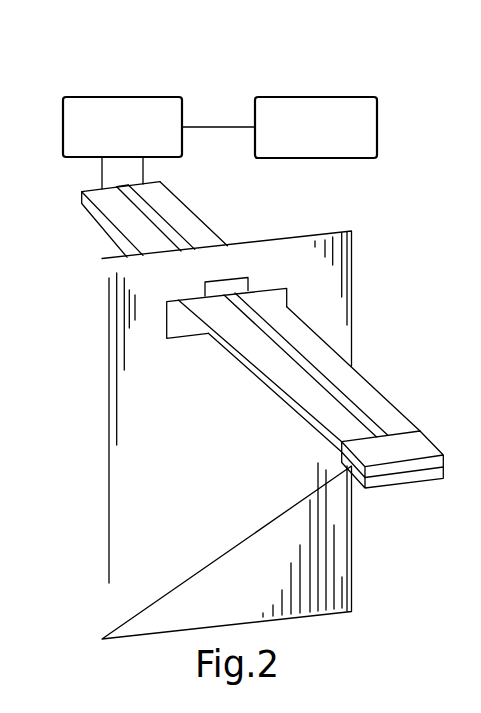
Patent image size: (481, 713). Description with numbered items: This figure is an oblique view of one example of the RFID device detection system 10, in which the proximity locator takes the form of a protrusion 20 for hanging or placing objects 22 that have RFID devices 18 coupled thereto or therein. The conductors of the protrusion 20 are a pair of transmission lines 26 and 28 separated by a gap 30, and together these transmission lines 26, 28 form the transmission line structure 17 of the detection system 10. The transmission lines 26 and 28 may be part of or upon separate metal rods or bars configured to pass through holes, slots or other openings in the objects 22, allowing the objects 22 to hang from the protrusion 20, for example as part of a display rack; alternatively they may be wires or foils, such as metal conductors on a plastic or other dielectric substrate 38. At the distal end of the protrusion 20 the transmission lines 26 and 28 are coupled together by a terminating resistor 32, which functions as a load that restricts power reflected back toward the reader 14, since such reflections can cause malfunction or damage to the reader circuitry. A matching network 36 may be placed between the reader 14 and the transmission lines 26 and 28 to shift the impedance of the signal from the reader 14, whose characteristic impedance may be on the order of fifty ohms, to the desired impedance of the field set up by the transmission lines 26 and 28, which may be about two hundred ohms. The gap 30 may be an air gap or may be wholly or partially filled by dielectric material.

The RFID device detection system 10 is at (72, 55).
The reader 14 is at (325, 96).
The transmission line structure 17 is at (131, 209).
The RFID device 18 is at (232, 288).
The protrusion 20 is at (397, 370).
The object 22 is at (345, 232).
The transmission line 26 is at (118, 215).
The transmission line 28 is at (185, 219).
The gap 30 is at (152, 208).
The terminating resistor 32 is at (425, 445).
The matching network 36 is at (63, 107).
The dielectric substrate 38 is at (402, 487).